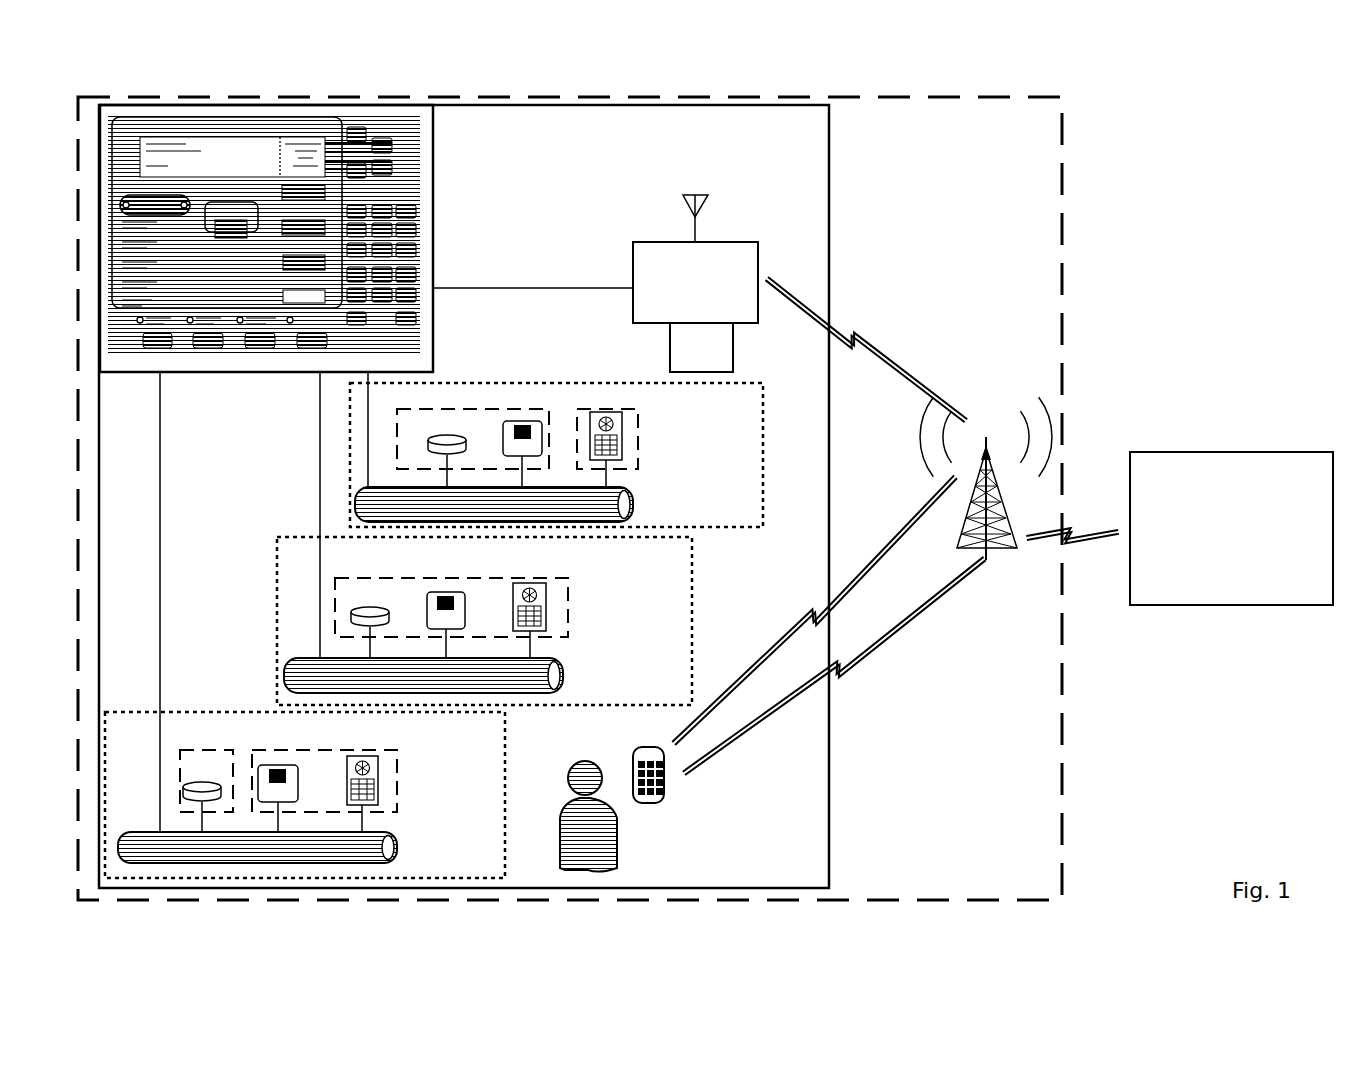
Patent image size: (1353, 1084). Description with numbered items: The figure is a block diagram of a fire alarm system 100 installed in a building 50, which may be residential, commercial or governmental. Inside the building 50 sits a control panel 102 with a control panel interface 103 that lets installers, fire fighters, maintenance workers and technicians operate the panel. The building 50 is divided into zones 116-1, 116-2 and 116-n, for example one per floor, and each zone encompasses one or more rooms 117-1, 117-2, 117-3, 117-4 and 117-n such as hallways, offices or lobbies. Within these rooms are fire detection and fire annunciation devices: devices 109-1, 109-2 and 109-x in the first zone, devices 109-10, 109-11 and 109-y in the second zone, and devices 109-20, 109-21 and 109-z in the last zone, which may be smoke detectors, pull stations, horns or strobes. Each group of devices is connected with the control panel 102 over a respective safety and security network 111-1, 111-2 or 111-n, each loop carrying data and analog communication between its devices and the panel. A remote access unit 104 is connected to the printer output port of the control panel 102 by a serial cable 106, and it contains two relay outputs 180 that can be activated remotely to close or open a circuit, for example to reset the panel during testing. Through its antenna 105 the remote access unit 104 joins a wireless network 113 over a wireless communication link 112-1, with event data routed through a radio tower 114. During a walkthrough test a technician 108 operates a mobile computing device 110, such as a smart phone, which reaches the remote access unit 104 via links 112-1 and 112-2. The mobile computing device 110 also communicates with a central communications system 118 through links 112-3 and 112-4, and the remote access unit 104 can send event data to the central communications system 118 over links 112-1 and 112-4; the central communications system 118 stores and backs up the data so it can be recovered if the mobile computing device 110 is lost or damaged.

The fire alarm system 100 is at (1063, 167).
The building 50 is at (829, 179).
The control panel 102 is at (435, 175).
The control panel interface 103 is at (400, 143).
The remote access unit 104 is at (695, 282).
The antenna 105 is at (688, 196).
The RS-232 cable 106 is at (565, 288).
The relay outputs 180 is at (701, 347).
The technician 108 is at (618, 837).
The mobile computing device 110 is at (640, 748).
The wireless communication link 112-1 is at (873, 347).
The wireless communication link 112-2 is at (812, 603).
The wireless communication link 112-3 is at (938, 602).
The wireless communication link 112-4 is at (1078, 540).
The wireless network 113 is at (1043, 403).
The radio tower 114 is at (1000, 513).
The central communications system 118 is at (1231, 528).
The zone 116-1 is at (512, 383).
The zone 116-2 is at (277, 540).
The zone 116-n is at (254, 712).
The room 117-1 is at (397, 437).
The room 117-2 is at (648, 434).
The room 117-3 is at (568, 612).
The room 117-4 is at (192, 746).
The room 117-n is at (406, 784).
The fire detection device 109-1 is at (443, 437).
The fire detection device 109-2 is at (522, 421).
The fire annunciation device 109-x is at (606, 412).
The fire detection device 109-10 is at (366, 609).
The fire detection device 109-11 is at (452, 592).
The fire annunciation device 109-y is at (540, 583).
The fire detection device 109-20 is at (205, 783).
The fire detection device 109-21 is at (290, 765).
The fire annunciation device 109-z is at (371, 756).
The safety and security network 111-1 is at (494, 504).
The safety and security network 111-2 is at (423, 675).
The safety and security network 111-n is at (257, 847).